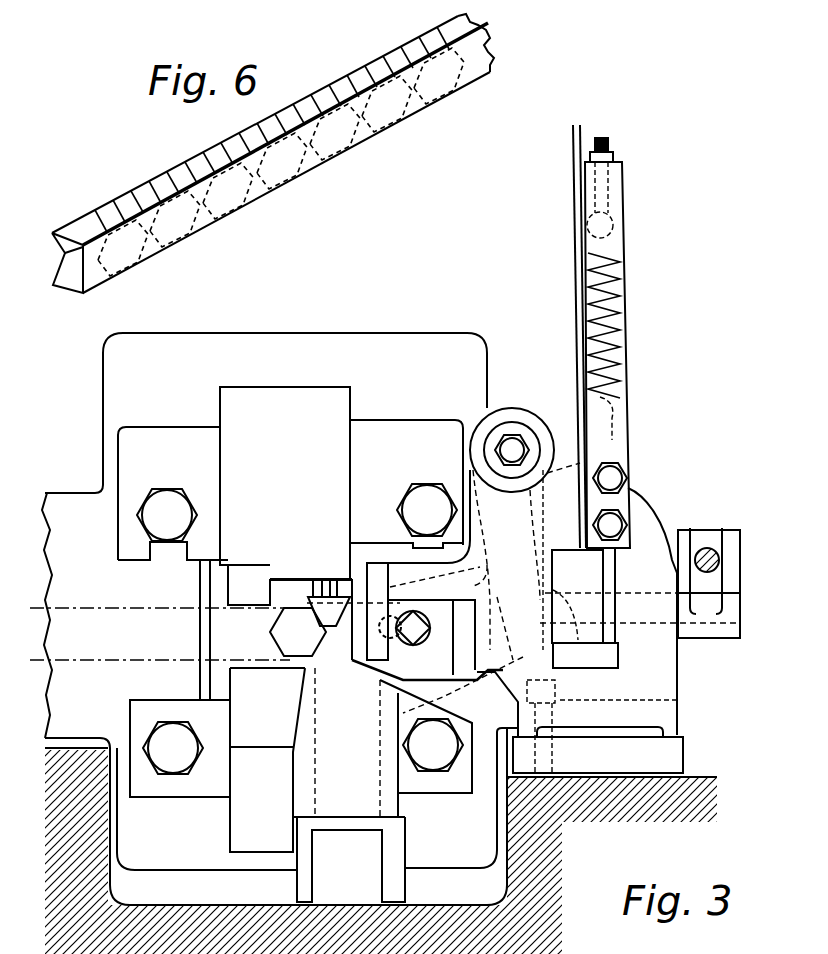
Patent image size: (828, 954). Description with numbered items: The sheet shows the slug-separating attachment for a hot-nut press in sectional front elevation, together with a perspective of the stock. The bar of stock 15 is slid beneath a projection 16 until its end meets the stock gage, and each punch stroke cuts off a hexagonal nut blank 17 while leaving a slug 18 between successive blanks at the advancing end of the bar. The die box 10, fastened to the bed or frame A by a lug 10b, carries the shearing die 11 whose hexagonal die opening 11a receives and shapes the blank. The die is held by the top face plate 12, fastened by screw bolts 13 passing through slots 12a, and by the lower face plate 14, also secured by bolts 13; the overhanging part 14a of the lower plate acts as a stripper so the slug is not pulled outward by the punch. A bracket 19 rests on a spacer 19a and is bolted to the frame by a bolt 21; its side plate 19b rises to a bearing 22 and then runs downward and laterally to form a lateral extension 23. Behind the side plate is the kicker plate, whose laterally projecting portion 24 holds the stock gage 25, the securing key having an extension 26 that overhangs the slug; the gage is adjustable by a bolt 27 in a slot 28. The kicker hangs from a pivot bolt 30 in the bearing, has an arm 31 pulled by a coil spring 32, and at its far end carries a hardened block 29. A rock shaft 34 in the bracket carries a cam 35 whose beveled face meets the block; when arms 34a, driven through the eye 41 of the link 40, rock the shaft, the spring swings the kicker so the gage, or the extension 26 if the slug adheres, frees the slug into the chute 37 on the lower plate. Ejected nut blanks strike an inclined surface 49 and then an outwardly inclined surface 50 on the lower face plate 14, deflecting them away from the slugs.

In FIG. 3, the die box 10 is at (281, 619).
In FIG. 3, the lug 10b is at (63, 508).
In FIG. 3, the shearing die 11 is at (276, 630).
In FIG. 3, the die opening 11a is at (282, 640).
In FIG. 3, the top face plate 12 is at (285, 496).
In FIG. 3, the slot 12a is at (171, 553).
In FIG. 3, the screw bolt 13 is at (160, 497).
In FIG. 3, the lower face plate 14 is at (261, 799).
In FIG. 3, the overhanging part 14a is at (322, 584).
In FIG. 6, the bar of stock 15 is at (477, 68).
In FIG. 3, the projection 16 is at (249, 580).
In FIG. 6, the nut blank 17 is at (273, 187).
In FIG. 6, the slug 18 is at (150, 248).
In FIG. 3, the bracket 19 is at (678, 666).
In FIG. 3, the spacer 19a is at (683, 752).
In FIG. 3, the side plate 19b is at (651, 534).
In FIG. 3, the bolt 21 is at (562, 691).
In FIG. 3, the bearing 22 is at (516, 410).
In FIG. 3, the lateral extension 23 is at (405, 623).
In FIG. 3, the laterally projecting portion 24 is at (378, 572).
In FIG. 3, the stock gage 25 is at (326, 582).
In FIG. 3, the extension 26 is at (320, 584).
In FIG. 3, the bolt 27 is at (432, 642).
In FIG. 3, the slot 28 is at (404, 644).
In FIG. 3, the hardened block 29 is at (491, 588).
In FIG. 3, the pivot bolt 30 is at (512, 450).
In FIG. 3, the arm 31 is at (563, 427).
In FIG. 3, the coil spring 32 is at (624, 281).
In FIG. 3, the rock shaft 34 is at (712, 624).
In FIG. 3, the arm 34a is at (735, 549).
In FIG. 3, the cam 35 is at (580, 569).
In FIG. 3, the chute 37 is at (349, 785).
In FIG. 3, the link 40 is at (709, 548).
In FIG. 3, the eye 41 is at (700, 531).
In FIG. 3, the inclined surface 49 is at (302, 694).
In FIG. 3, the outwardly inclined surface 50 is at (261, 707).
In FIG. 3, the bed or frame A is at (248, 927).